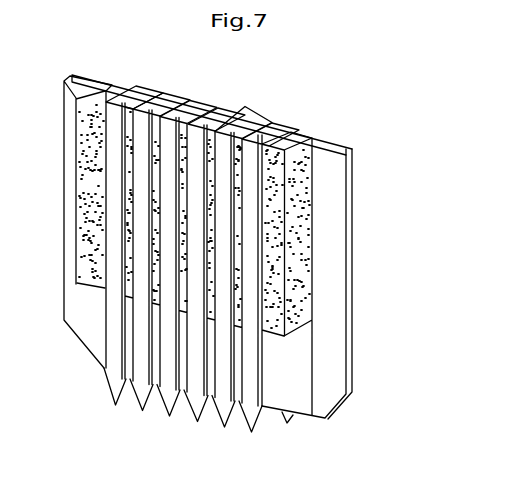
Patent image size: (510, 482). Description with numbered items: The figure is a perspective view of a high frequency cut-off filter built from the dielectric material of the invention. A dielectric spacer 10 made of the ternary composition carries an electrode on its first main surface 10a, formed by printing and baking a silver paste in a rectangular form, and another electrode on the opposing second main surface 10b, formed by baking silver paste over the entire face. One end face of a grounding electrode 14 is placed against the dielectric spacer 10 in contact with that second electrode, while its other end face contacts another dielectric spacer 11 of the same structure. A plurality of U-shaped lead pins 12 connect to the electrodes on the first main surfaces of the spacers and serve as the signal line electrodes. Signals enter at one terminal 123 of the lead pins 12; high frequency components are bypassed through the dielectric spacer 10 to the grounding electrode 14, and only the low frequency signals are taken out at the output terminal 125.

The dielectric spacer 10 is at (339, 269).
The first main surface 10a is at (268, 219).
The second main surface 10b is at (312, 183).
The other dielectric spacer 11 is at (314, 124).
The U-shaped lead pins 12 is at (265, 306).
The grounding electrode 14 is at (326, 266).
The input terminal 123 is at (253, 432).
The output terminal 125 is at (290, 424).